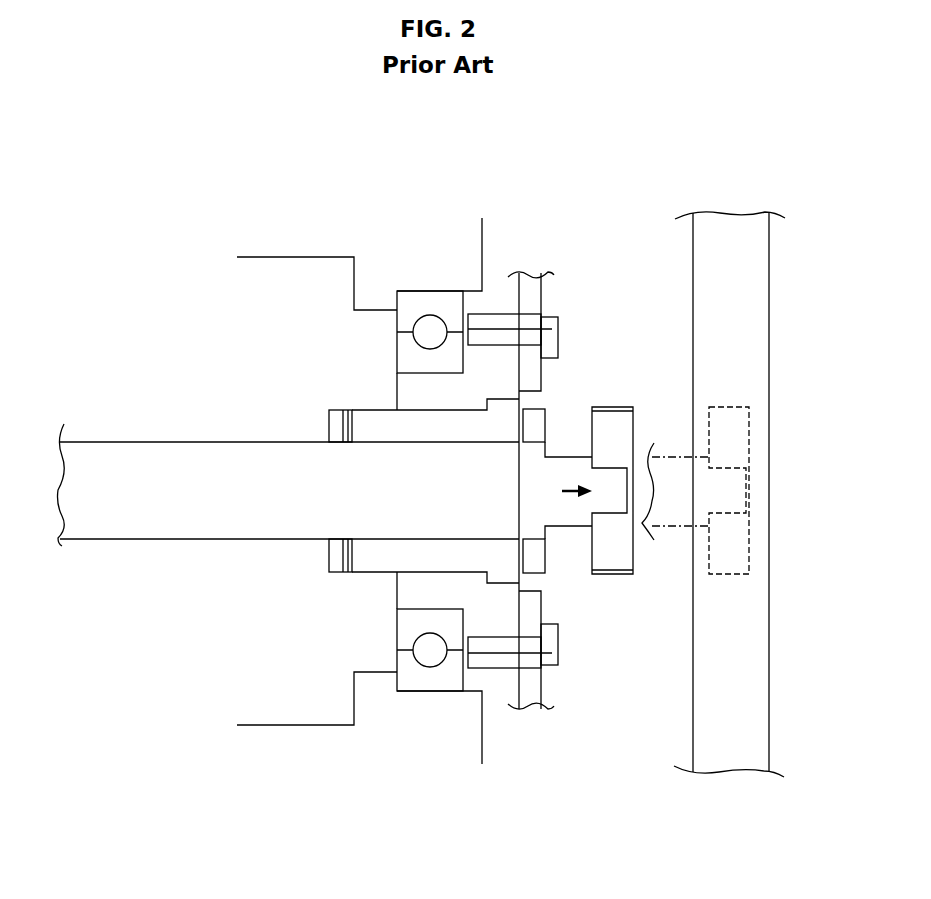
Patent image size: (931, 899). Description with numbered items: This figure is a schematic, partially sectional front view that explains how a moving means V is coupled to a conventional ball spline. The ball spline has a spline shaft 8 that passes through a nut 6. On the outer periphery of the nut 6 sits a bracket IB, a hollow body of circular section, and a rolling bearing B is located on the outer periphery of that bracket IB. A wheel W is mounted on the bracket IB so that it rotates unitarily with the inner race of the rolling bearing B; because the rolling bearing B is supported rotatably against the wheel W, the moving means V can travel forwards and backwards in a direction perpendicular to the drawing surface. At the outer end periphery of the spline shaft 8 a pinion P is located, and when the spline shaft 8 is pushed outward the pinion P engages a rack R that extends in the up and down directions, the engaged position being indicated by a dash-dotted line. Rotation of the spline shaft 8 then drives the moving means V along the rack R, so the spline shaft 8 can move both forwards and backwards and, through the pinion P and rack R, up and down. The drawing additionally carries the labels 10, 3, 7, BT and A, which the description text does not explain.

The prior art bearing device 10 is at (205, 572).
The spline shaft 8 is at (138, 452).
The first collar 3 is at (328, 425).
The second collar 7 is at (328, 555).
The nut 6 is at (370, 411).
The moving means V is at (470, 243).
The rolling bearing B is at (421, 300).
The bolt BT is at (557, 339).
The wheel W is at (535, 293).
The bracket IB is at (500, 379).
The pinion P is at (612, 412).
The rack R is at (755, 303).
The direction of movement A is at (567, 493).